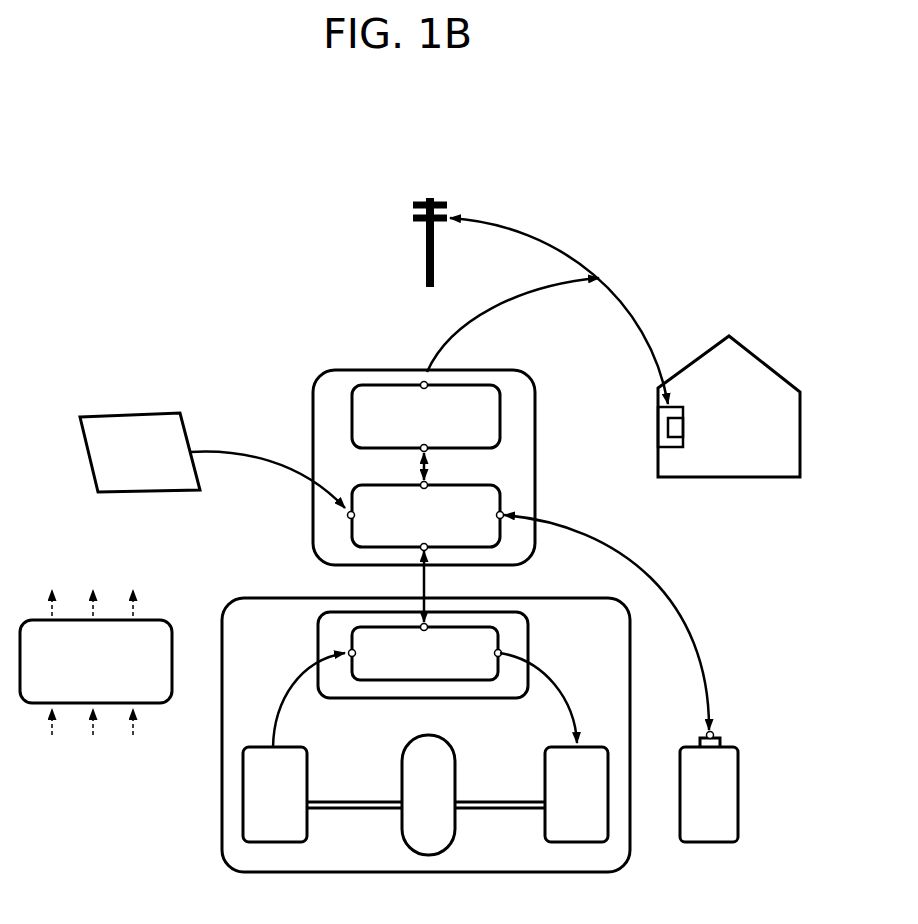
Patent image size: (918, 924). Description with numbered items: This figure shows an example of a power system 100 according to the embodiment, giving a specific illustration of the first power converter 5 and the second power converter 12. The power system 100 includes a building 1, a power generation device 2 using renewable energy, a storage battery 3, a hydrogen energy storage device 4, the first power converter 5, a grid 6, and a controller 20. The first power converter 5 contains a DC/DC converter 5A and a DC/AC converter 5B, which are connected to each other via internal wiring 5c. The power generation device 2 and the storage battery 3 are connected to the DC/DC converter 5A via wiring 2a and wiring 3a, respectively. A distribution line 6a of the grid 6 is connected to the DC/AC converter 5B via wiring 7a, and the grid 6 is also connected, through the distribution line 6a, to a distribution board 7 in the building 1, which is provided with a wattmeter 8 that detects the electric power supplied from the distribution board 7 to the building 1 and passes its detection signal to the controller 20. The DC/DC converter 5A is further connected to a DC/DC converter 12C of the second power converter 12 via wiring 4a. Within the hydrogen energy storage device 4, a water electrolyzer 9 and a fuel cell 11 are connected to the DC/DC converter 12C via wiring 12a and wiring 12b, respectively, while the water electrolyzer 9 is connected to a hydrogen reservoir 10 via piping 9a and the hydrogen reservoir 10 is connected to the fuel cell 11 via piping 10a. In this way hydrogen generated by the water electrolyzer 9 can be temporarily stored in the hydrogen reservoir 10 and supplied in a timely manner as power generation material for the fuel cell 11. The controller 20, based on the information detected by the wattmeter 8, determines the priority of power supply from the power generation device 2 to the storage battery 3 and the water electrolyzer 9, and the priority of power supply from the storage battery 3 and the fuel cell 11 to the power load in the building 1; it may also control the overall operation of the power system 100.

The power system 100 is at (160, 324).
The building 1 is at (762, 358).
The power generation device 2 is at (148, 470).
The wiring 2a is at (266, 457).
The storage battery 3 is at (722, 813).
The wiring 3a is at (702, 688).
The hydrogen energy storage device 4 is at (552, 597).
The wiring 4a is at (421, 585).
The first power converter 5 is at (537, 456).
The DC/DC converter 5A is at (448, 537).
The DC/AC converter 5B is at (448, 437).
The internal wiring 5c is at (418, 466).
The grid 6 is at (413, 222).
The distribution line 6a is at (577, 265).
The distribution board 7 is at (657, 424).
The wiring 7a is at (503, 304).
The wattmeter 8 is at (686, 417).
The water electrolyzer 9 is at (590, 813).
The piping 9a is at (496, 800).
The hydrogen reservoir 10 is at (447, 813).
The piping 10a is at (349, 800).
The fuel cell 11 is at (295, 813).
The second power converter 12 is at (317, 633).
The DC/DC converter 12C is at (456, 670).
The wiring 12a is at (557, 695).
The wiring 12b is at (290, 700).
The controller 20 is at (116, 678).